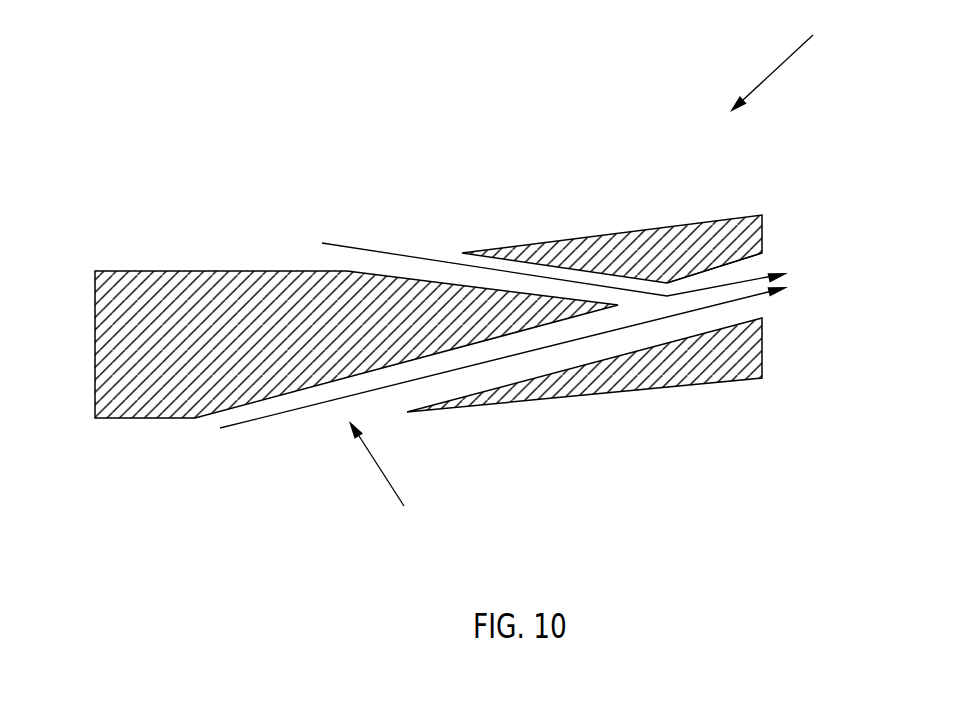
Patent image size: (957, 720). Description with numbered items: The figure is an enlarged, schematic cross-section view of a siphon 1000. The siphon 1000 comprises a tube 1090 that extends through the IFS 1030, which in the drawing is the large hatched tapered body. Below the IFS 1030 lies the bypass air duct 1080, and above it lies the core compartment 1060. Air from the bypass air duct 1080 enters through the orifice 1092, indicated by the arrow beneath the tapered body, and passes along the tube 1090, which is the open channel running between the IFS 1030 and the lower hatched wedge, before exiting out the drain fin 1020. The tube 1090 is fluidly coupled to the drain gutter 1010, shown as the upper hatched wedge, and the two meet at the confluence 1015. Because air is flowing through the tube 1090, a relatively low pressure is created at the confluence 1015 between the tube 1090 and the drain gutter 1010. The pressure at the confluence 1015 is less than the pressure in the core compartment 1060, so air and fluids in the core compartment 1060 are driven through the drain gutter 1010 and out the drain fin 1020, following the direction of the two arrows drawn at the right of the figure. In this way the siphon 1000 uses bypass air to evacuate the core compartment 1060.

The siphon 1000 is at (803, 61).
The drain gutter 1010 is at (557, 258).
The confluence 1015 is at (666, 270).
The drain fin 1020 is at (762, 350).
The IFS 1030 is at (180, 270).
The core compartment 1060 is at (253, 190).
The bypass air duct 1080 is at (175, 492).
The tube 1090 is at (545, 376).
The orifice 1092 is at (392, 482).